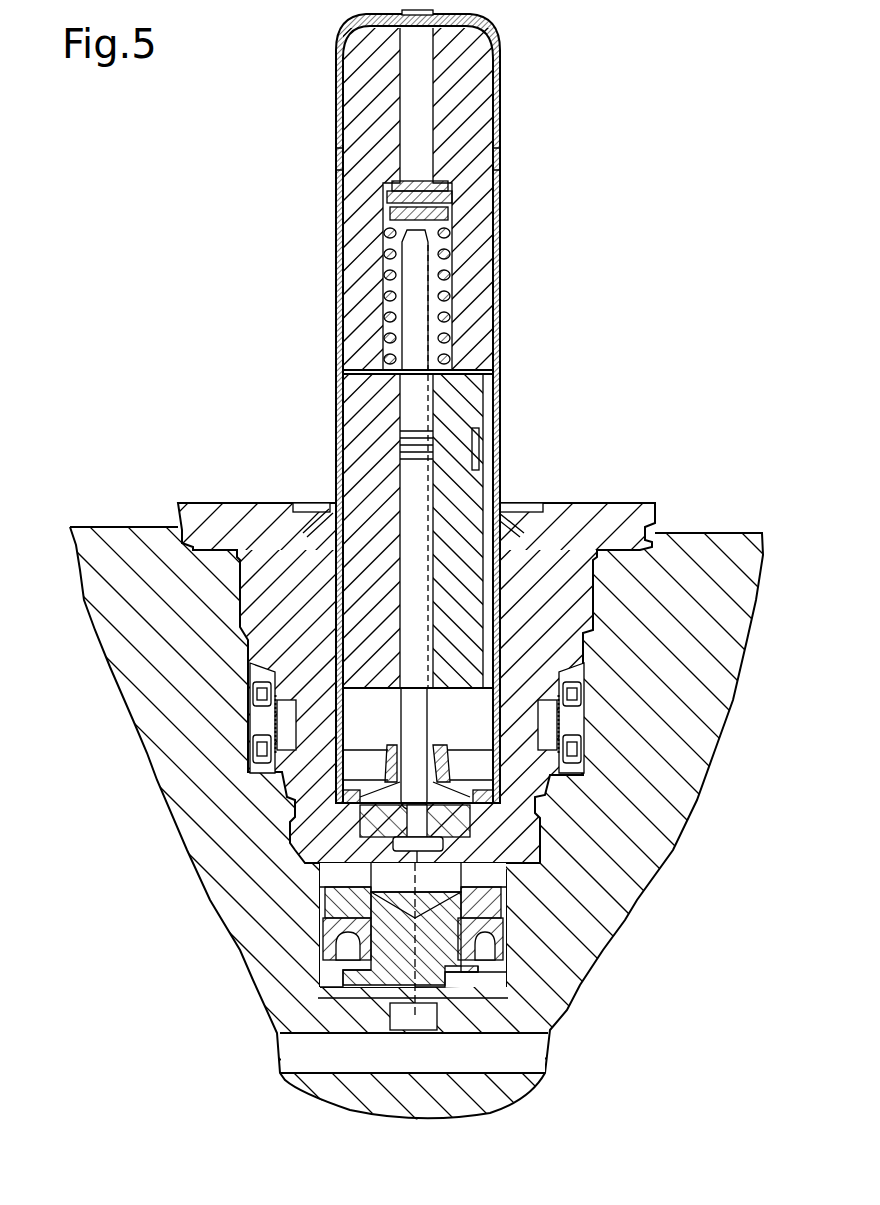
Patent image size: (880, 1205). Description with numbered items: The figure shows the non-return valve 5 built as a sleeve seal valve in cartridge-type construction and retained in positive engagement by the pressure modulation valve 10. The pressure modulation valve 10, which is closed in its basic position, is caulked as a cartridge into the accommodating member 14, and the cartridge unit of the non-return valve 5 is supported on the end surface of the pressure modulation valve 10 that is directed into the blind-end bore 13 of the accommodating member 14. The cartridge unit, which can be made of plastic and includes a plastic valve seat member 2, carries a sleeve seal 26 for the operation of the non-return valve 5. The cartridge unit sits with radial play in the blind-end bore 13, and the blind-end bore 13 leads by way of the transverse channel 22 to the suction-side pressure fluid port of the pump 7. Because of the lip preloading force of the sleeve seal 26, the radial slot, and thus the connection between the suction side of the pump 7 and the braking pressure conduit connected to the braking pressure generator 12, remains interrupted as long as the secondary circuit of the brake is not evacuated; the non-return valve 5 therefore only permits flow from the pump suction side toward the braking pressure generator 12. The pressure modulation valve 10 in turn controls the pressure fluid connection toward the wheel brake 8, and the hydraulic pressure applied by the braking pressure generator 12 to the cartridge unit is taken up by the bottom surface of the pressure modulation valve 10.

The valve seat member 2 is at (506, 897).
The non-return valve 5 is at (497, 992).
The pump 7 is at (305, 873).
The wheel brake 8 is at (245, 723).
The pressure modulation valve 10 is at (262, 505).
The braking pressure generator 12 is at (278, 1053).
The blind-end bore 13 is at (370, 1000).
The accommodating member 14 is at (692, 540).
The transverse channel 22 is at (342, 873).
The sleeve seal 26 is at (500, 940).